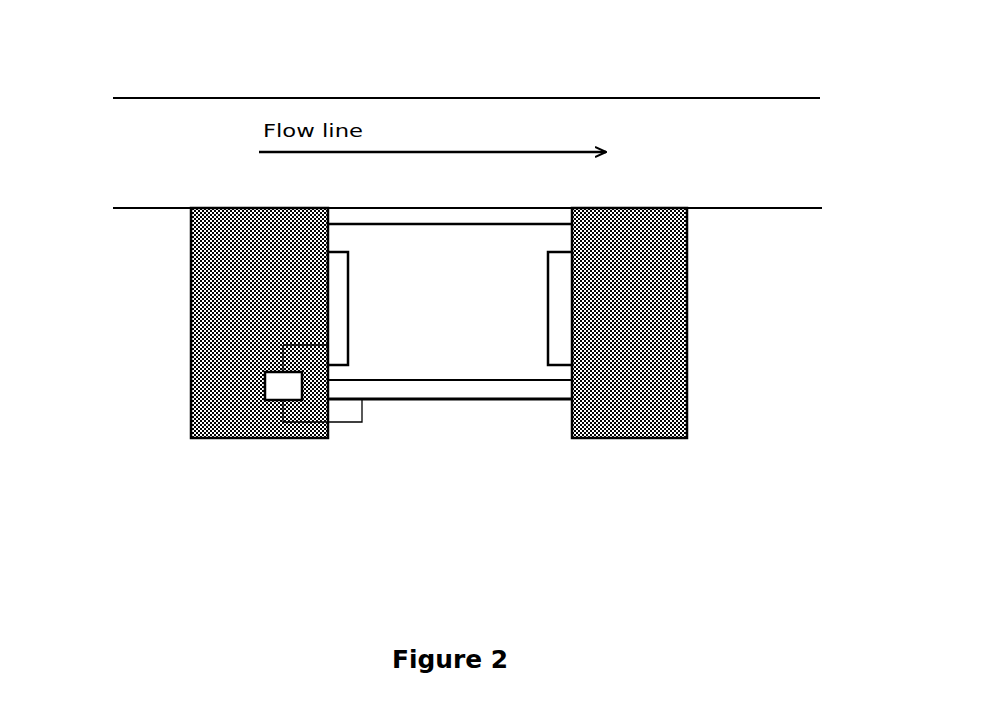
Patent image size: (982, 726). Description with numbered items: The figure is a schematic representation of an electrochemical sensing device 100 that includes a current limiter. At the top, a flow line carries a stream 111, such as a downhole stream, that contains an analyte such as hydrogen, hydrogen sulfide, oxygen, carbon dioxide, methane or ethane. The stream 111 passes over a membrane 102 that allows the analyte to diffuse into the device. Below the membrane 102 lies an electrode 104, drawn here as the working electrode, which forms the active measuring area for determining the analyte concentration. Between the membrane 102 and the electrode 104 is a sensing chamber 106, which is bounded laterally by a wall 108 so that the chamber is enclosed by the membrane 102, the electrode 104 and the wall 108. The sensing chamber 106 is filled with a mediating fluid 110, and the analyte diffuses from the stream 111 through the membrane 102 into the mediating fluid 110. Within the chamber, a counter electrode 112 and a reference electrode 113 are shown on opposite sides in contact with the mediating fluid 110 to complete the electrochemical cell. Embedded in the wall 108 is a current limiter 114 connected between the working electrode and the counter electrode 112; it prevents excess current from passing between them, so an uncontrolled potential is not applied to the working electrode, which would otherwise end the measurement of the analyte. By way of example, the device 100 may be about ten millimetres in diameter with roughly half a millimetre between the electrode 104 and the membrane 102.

The device 100 is at (735, 522).
The membrane 102 is at (540, 215).
The electrode 104 is at (520, 392).
The sensing chamber 106 is at (403, 281).
The wall 108 is at (228, 272).
The mediating fluid 110 is at (452, 301).
The stream 111 is at (292, 106).
The counter electrode 112 is at (327, 309).
The reference electrode 113 is at (558, 345).
The current limiter 114 is at (262, 388).